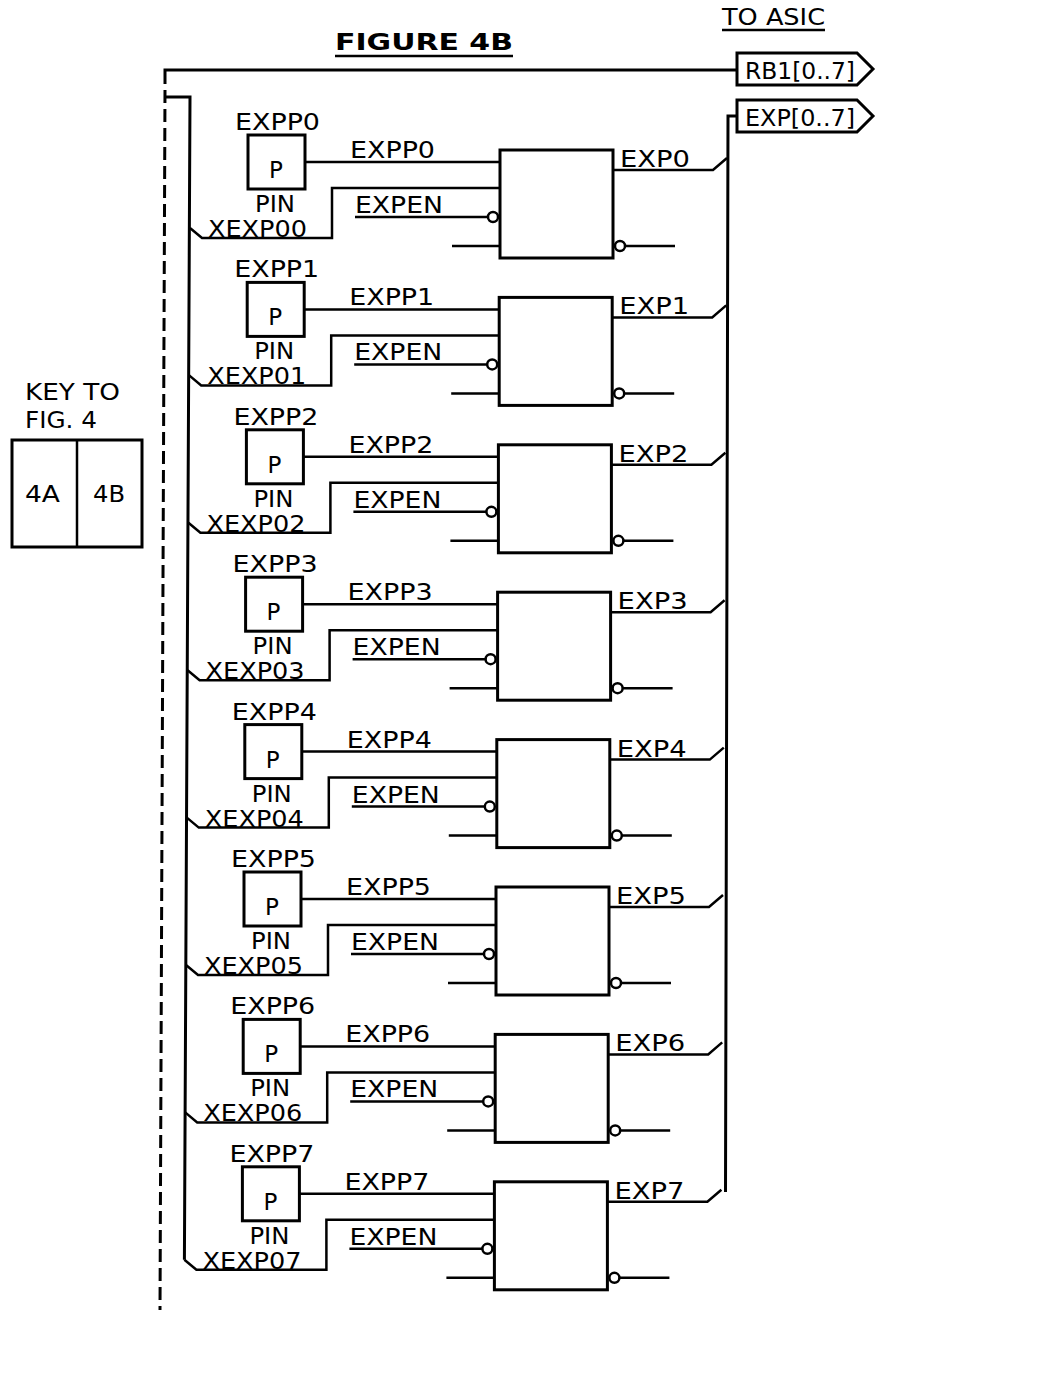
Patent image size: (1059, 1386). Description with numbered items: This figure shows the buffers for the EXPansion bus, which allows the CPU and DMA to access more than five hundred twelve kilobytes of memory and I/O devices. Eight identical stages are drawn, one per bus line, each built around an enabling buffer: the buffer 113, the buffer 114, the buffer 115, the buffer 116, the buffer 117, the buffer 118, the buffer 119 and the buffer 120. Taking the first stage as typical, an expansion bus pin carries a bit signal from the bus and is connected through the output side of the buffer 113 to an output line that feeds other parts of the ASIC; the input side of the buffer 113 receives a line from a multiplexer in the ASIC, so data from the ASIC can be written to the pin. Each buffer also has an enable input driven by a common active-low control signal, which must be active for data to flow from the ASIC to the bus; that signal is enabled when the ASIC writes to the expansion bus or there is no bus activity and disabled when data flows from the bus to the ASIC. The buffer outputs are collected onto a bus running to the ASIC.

The buffer 113 is at (556, 192).
The buffer 114 is at (555, 339).
The buffer 115 is at (554, 487).
The buffer 116 is at (554, 634).
The buffer 117 is at (553, 782).
The buffer 118 is at (552, 929).
The buffer 119 is at (551, 1076).
The buffer 120 is at (550, 1224).